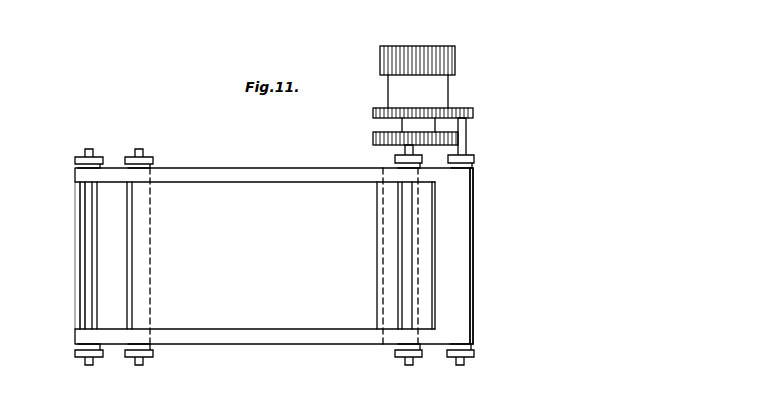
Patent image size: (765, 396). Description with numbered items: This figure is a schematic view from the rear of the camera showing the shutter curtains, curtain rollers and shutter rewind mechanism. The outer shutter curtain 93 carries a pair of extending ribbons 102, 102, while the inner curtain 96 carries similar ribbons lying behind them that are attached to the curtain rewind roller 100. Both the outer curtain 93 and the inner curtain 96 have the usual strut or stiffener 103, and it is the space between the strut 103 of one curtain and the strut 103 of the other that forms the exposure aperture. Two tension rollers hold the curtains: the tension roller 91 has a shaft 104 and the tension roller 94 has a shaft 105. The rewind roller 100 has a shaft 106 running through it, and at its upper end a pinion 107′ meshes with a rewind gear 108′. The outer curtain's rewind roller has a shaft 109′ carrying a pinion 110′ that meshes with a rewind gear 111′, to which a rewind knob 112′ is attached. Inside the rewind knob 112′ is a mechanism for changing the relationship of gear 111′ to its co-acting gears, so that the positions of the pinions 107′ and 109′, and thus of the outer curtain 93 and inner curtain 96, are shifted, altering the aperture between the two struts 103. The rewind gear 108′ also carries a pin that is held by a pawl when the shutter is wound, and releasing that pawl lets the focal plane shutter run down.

The tension roller 91 is at (80, 241).
The outer shutter curtain 93 is at (450, 272).
The tension roller 94 is at (152, 168).
The inner curtain 96 is at (330, 322).
The curtain rewind roller 100 is at (400, 351).
The extending ribbons 102 is at (264, 168).
The strut 103 is at (377, 256).
The shaft 104 is at (90, 149).
The shaft 105 is at (140, 149).
The shaft 106 is at (410, 363).
The pinion 107′ is at (404, 146).
The rewind gear 108′ is at (377, 138).
The shaft 109′ is at (466, 146).
The pinion 110′ is at (474, 112).
The rewind gear 111′ is at (374, 112).
The rewind knob 112′ is at (438, 60).